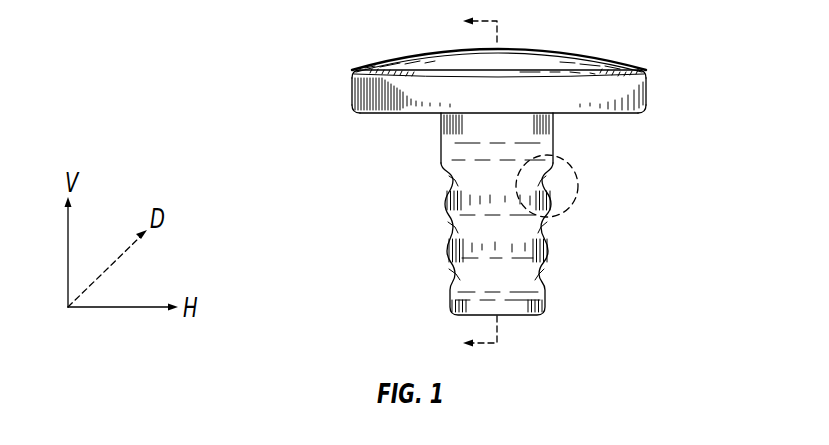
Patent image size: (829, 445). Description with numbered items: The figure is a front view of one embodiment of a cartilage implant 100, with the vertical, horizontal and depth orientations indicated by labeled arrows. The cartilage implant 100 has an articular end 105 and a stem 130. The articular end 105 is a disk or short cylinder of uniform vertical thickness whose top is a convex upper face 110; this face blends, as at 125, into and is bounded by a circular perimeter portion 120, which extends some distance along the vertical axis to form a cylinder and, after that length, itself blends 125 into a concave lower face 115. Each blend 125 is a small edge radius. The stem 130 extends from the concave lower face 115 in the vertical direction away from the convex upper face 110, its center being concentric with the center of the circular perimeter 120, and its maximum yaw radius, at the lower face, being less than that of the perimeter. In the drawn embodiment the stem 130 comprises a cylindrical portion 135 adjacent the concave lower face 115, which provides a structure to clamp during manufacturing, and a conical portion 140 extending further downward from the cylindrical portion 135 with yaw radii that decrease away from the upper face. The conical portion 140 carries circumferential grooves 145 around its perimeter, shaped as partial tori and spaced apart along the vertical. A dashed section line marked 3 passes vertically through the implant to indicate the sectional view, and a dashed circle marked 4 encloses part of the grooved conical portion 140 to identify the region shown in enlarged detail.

The section line 3- 3 is at (471, 182).
The detail region of FIG. 4 is at (578, 190).
The cartilage implant 100 is at (302, 52).
The articular end 105 is at (350, 52).
The convex upper face 110 is at (585, 58).
The concave lower face 115 is at (602, 118).
The circular perimeter portion 120 is at (629, 92).
The blend 125 is at (646, 70).
The stem 130 is at (367, 118).
The cylindrical portion 135 is at (441, 133).
The conical portion 140 is at (437, 153).
The circumferential grooves 145 is at (541, 228).